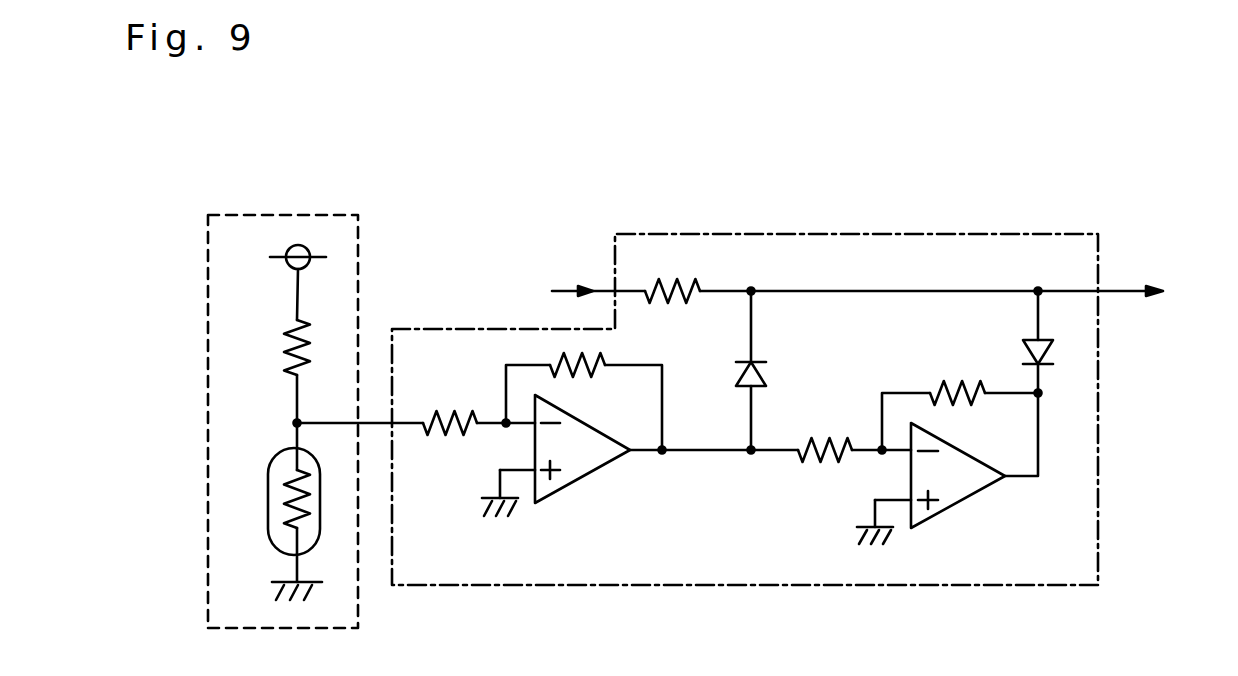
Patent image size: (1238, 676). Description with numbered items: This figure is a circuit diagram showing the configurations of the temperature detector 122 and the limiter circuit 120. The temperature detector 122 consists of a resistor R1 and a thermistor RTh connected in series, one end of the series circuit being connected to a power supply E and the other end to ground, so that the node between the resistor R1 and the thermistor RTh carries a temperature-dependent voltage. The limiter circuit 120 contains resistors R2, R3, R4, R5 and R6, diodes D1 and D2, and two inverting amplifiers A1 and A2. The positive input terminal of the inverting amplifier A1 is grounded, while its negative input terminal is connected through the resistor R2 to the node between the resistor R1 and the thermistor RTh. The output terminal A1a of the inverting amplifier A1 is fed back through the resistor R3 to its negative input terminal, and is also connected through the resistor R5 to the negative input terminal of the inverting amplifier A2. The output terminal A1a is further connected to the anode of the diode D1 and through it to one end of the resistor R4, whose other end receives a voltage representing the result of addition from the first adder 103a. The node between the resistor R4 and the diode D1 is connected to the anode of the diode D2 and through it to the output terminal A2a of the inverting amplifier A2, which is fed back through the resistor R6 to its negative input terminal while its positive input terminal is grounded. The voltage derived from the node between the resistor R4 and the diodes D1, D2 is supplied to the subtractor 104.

The temperature detector 122 is at (260, 214).
The power supply E is at (306, 246).
The resistor R1 is at (282, 347).
The thermistor RTh is at (265, 502).
The limiter circuit 120 is at (1012, 233).
The first adder 103a is at (550, 272).
The resistor R2 is at (453, 404).
The resistor R3 is at (597, 377).
The inverting amplifier A1 is at (583, 478).
The output terminal A1a is at (632, 452).
The resistor R4 is at (682, 310).
The diode D1 is at (768, 375).
The resistor R5 is at (827, 432).
The resistor R6 is at (958, 377).
The inverting amplifier A2 is at (958, 503).
The output terminal A2a is at (1007, 480).
The diode D2 is at (1052, 352).
The subtractor 104 is at (1190, 277).